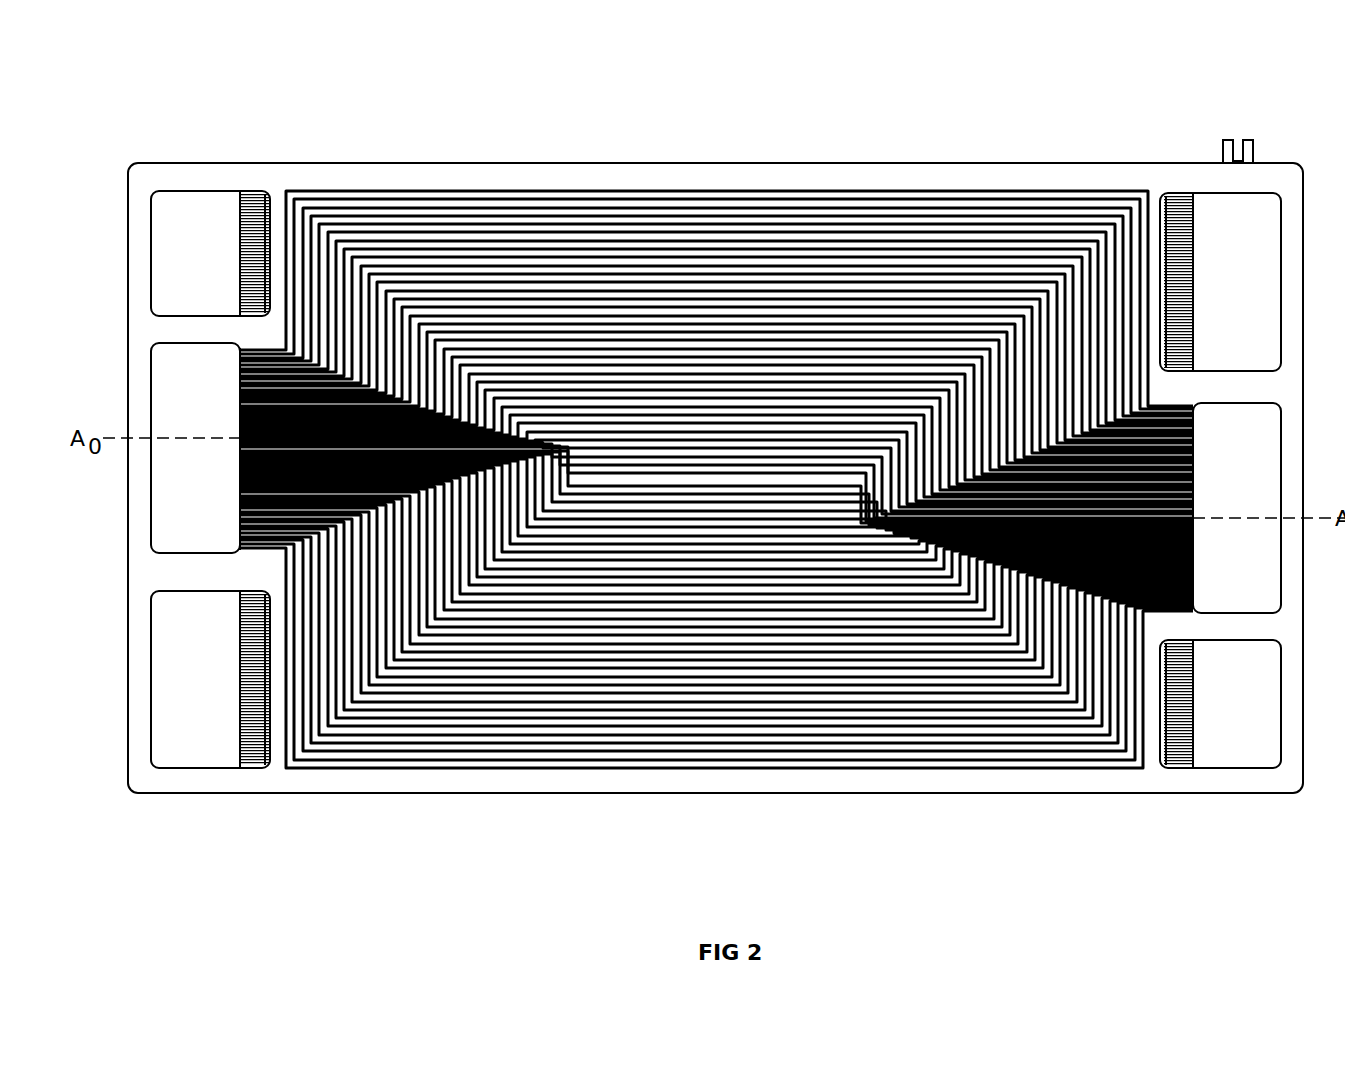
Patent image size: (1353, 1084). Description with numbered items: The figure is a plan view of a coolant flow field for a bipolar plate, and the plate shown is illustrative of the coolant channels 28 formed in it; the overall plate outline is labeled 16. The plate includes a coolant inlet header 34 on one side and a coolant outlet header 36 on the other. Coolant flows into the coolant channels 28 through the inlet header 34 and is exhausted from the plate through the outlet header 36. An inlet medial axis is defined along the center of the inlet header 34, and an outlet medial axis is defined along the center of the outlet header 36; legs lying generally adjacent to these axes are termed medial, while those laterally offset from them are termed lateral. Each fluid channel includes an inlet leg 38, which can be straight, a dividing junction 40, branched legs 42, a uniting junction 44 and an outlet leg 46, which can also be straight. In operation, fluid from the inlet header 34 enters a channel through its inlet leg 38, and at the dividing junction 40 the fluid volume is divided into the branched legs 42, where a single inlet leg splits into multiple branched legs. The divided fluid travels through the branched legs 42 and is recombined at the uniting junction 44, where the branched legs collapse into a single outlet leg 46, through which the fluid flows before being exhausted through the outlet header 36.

The heater element 16 is at (1042, 158).
The coolant channels 28 is at (578, 180).
The coolant inlet header 34 is at (1270, 432).
The coolant outlet header 36 is at (145, 415).
The inlet leg 38 is at (1186, 410).
The dividing junction 40 is at (1117, 427).
The branched legs 42 is at (915, 205).
The uniting junction 44 is at (323, 367).
The outlet leg 46 is at (230, 355).